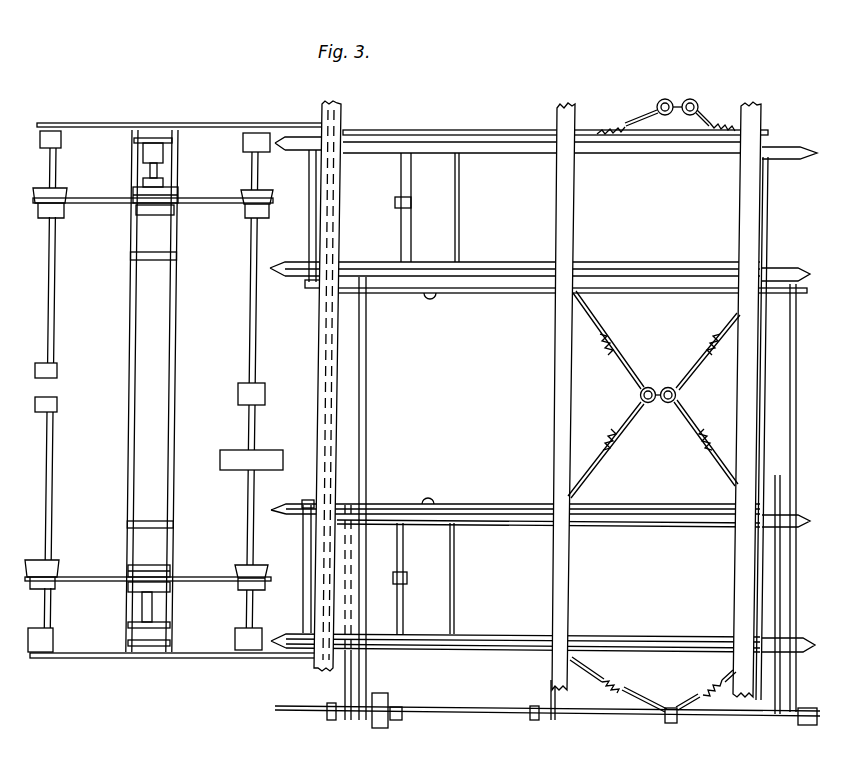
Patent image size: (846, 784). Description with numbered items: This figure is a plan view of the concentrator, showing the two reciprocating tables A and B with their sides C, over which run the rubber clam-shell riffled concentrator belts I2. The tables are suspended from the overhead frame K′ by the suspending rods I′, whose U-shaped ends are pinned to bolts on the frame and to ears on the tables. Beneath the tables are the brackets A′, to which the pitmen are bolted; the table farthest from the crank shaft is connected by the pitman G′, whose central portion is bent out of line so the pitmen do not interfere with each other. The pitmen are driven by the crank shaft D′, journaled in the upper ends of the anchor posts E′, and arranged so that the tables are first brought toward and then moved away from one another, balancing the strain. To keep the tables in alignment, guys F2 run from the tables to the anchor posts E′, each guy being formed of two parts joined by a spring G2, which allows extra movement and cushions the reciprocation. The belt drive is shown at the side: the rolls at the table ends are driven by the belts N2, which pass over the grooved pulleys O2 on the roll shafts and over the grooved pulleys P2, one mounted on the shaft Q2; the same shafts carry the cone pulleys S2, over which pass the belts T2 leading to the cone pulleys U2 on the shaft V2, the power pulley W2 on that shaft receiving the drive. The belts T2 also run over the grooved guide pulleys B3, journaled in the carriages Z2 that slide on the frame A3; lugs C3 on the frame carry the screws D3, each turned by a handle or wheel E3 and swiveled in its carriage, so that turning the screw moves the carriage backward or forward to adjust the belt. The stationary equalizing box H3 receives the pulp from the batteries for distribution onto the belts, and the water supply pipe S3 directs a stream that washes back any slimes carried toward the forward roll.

The belt N2 is at (215, 124).
The grooved pulley P2 is at (42, 125).
The shaft Q2 is at (47, 285).
The cone pulley S2 is at (67, 205).
The belt T2 is at (116, 204).
The frame A3 is at (179, 228).
The handle or wheel E3 is at (134, 141).
The lug C3 is at (172, 151).
The screw D3 is at (150, 170).
The carriage Z2 is at (164, 186).
The grooved guide pulley B3 is at (174, 212).
The cone pulley U2 is at (243, 218).
The shaft V2 is at (260, 360).
The pulley W2 is at (283, 456).
The frame K′ is at (521, 143).
The concentrator belt I2 is at (507, 264).
The side C is at (523, 276).
The reciprocating table B is at (452, 504).
The reciprocating table A is at (425, 150).
The grooved pulley O2 is at (321, 127).
The water supply pipe S3 is at (397, 208).
The equalizing box H3 is at (452, 224).
The suspending rod I′ is at (748, 412).
The pitman G′ is at (625, 442).
The vertical rod C′ is at (797, 488).
The bracket A′ is at (781, 560).
The spring G2 is at (620, 690).
The guy F2 is at (390, 694).
The crank shaft D′ is at (487, 711).
The anchor post E′ is at (535, 720).